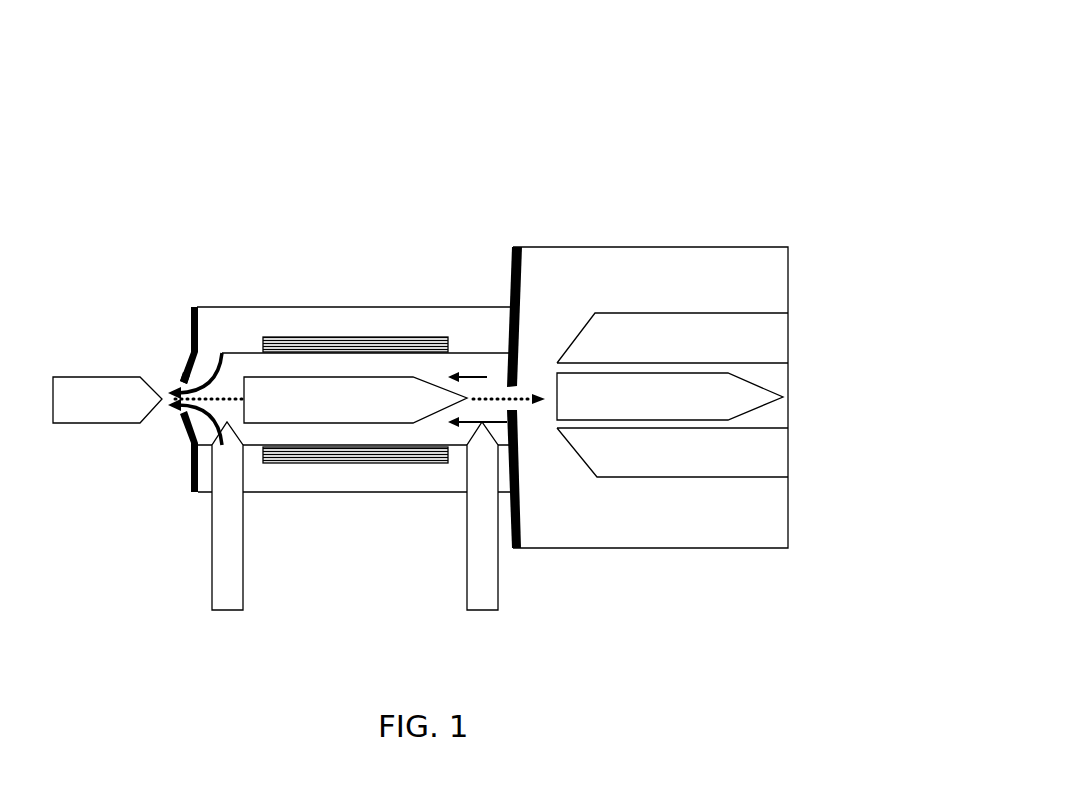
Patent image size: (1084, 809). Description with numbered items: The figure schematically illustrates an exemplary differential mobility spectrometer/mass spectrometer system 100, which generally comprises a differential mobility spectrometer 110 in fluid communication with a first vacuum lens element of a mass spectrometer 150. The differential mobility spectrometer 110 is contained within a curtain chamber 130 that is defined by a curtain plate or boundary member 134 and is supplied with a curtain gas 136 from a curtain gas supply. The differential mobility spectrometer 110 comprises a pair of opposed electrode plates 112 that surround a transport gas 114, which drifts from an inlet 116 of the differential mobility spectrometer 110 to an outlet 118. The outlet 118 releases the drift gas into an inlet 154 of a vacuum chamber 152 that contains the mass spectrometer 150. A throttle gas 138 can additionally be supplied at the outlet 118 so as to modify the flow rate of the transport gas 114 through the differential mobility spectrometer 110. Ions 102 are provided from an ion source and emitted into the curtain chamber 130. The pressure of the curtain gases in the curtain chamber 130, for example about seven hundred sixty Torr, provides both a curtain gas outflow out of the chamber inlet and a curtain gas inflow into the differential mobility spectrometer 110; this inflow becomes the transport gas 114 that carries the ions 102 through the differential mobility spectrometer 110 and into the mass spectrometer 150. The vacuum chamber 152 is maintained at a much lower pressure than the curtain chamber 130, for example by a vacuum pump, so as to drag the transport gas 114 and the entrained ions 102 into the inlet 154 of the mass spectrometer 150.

The differential mobility spectrometer/mass spectrometer system 100 is at (697, 105).
The ions 102 is at (85, 425).
The differential mobility spectrometer 110 is at (355, 515).
The electrode plates 112 is at (300, 337).
The transport gas 114 is at (358, 376).
The inlet 116 is at (236, 368).
The outlet 118 is at (466, 364).
The curtain chamber 130 is at (355, 468).
The curtain plate 134 is at (180, 363).
The curtain gas 136 is at (230, 613).
The throttle gas 138 is at (484, 613).
The mass spectrometer 150 is at (758, 338).
The vacuum chamber 152 is at (770, 270).
The inlet of the vacuum chamber 154 is at (513, 383).